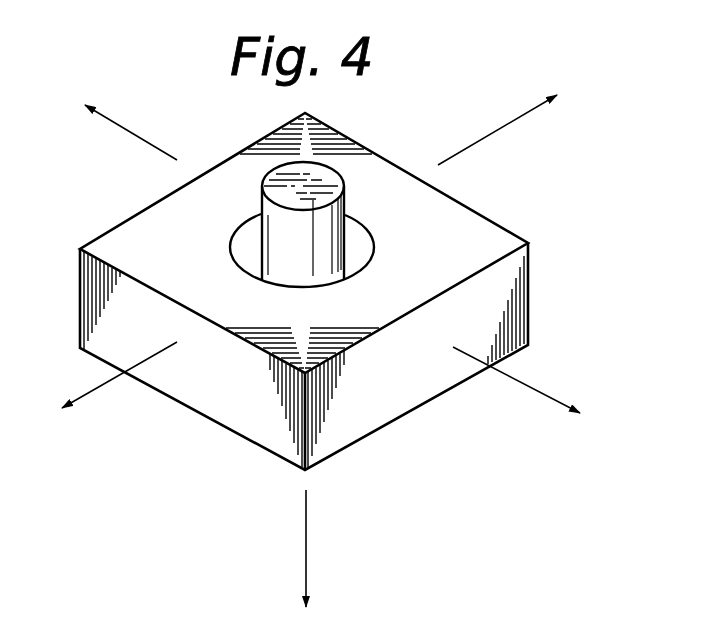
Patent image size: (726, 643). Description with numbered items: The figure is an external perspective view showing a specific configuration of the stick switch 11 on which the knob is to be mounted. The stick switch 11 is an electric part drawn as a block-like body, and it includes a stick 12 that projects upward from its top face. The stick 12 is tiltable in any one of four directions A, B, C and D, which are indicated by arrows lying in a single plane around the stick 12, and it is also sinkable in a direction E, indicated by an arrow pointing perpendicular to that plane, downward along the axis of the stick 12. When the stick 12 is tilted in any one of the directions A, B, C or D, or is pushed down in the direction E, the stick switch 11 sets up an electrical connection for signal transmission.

The stick switch 11 is at (530, 292).
The stick 12 is at (335, 222).
The direction A is at (513, 120).
The direction B is at (104, 385).
The direction C is at (115, 124).
The direction D is at (532, 396).
The direction E is at (289, 556).